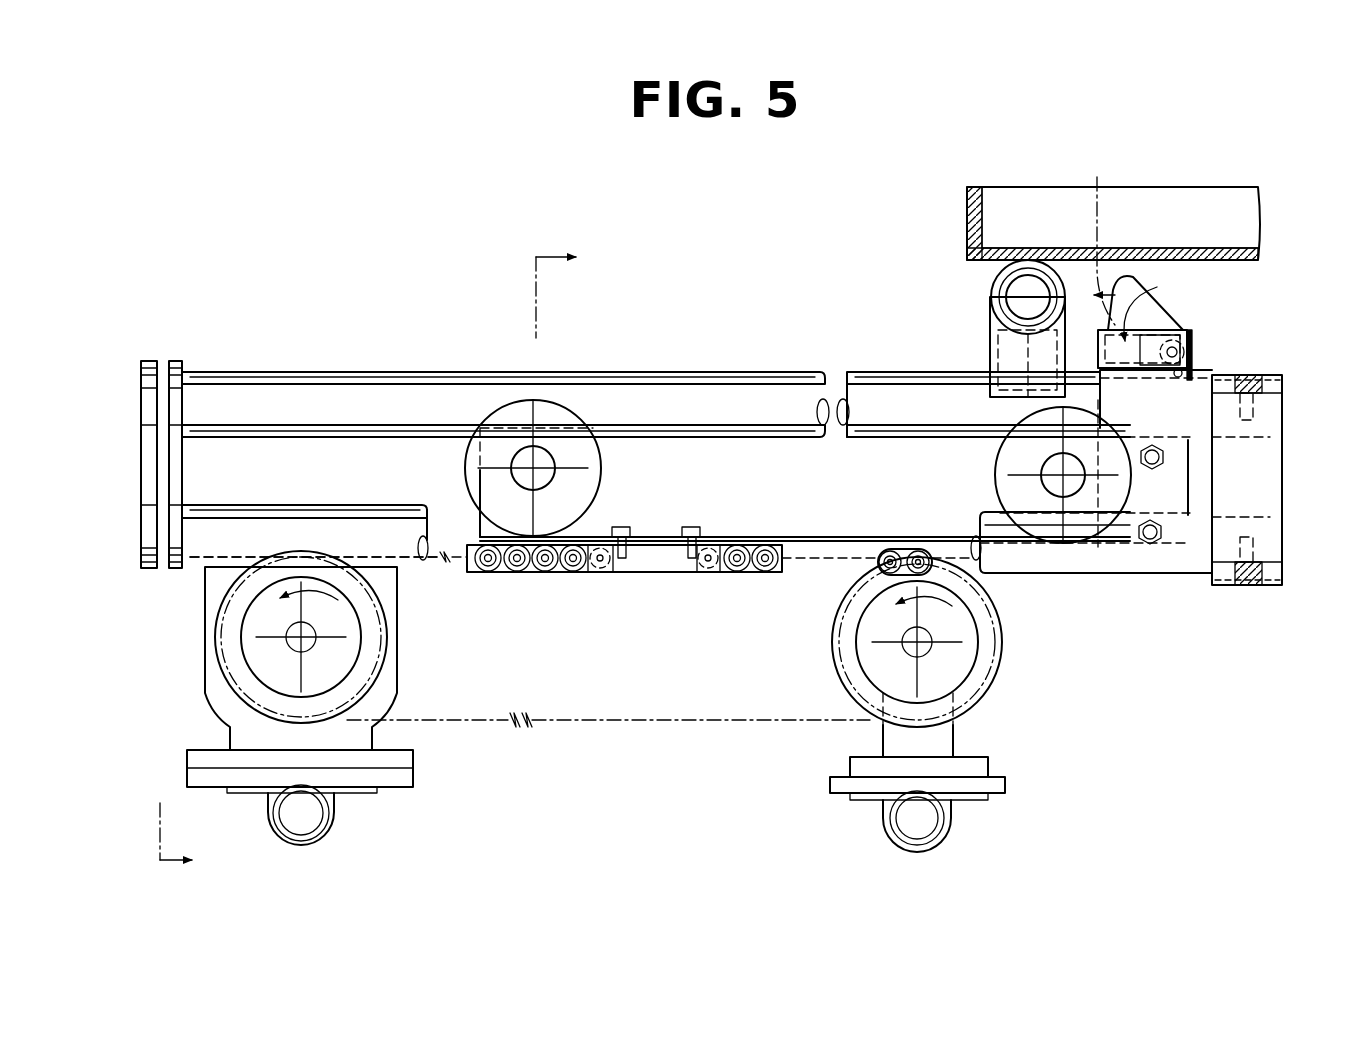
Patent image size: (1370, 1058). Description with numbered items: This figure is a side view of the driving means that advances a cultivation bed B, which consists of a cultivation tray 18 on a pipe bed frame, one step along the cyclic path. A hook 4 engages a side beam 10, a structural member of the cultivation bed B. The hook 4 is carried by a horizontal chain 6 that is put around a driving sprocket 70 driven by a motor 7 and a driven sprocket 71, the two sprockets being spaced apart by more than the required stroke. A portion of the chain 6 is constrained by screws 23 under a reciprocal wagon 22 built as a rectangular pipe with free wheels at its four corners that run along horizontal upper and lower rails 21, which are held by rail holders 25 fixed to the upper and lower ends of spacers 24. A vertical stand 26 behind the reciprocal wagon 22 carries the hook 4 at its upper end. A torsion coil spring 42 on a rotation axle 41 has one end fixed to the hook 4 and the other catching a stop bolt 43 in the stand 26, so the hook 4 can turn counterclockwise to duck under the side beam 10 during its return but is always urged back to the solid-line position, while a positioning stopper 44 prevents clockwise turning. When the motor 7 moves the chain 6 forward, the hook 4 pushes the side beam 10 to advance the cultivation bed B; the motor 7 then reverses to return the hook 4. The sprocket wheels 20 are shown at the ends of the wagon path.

The hook 4 is at (1220, 312).
The chain 6 is at (584, 758).
The motor 7 is at (203, 605).
The side beam 10 is at (993, 295).
The cultivation tray 18 is at (966, 217).
The sprocket 20 is at (512, 418).
The upper and lower rails 21 is at (383, 385).
The reciprocal wagon 22 is at (740, 440).
The screws 23 is at (622, 527).
The spacers 24 is at (147, 454).
The rail holders 25 is at (145, 371).
The vertical stand 26 is at (1193, 462).
The rotation axle 41 is at (1198, 348).
The torsion coil spring 42 is at (1183, 354).
The stop bolt 43 is at (1178, 378).
The positioning stopper 44 is at (1198, 330).
The driving sprocket 70 is at (233, 687).
The driven sprocket 71 is at (985, 703).
The cultivation bed B is at (1099, 211).